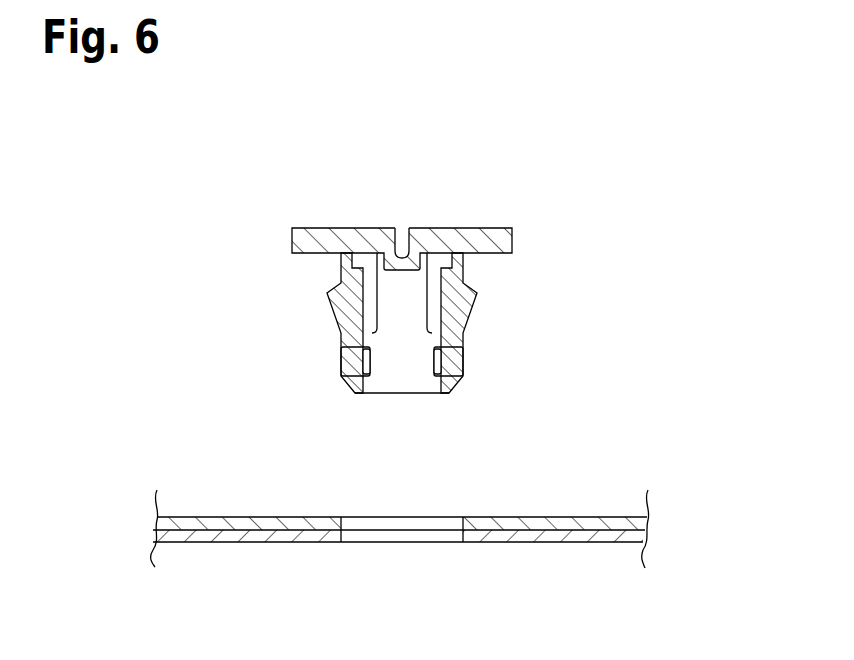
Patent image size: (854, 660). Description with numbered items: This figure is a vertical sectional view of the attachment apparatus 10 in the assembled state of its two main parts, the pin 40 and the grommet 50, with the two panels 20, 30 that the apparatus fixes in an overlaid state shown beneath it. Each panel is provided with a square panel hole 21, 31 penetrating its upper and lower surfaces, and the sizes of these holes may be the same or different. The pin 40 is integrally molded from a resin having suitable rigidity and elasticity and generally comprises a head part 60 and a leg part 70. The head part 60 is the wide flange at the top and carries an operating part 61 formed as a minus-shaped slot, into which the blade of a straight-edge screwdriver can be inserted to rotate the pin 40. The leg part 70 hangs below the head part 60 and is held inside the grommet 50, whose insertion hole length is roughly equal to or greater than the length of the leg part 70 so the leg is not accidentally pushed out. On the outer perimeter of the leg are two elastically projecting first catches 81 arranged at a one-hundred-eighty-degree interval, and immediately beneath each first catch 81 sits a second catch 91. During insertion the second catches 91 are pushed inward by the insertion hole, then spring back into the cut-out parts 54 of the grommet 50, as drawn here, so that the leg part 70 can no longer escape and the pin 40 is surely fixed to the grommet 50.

The attachment apparatus 10 is at (436, 298).
The panel 20 is at (400, 499).
The panel hole 21 is at (403, 517).
The panel 30 is at (399, 587).
The panel hole 31 is at (403, 542).
The pin 40 is at (456, 302).
The grommet 50 is at (342, 258).
The cut-out part 54 is at (357, 393).
The head part 60 is at (459, 204).
The operating part 61 is at (403, 246).
The leg part 70 is at (421, 373).
The first catch 81 is at (328, 307).
The second catch 91 is at (343, 370).